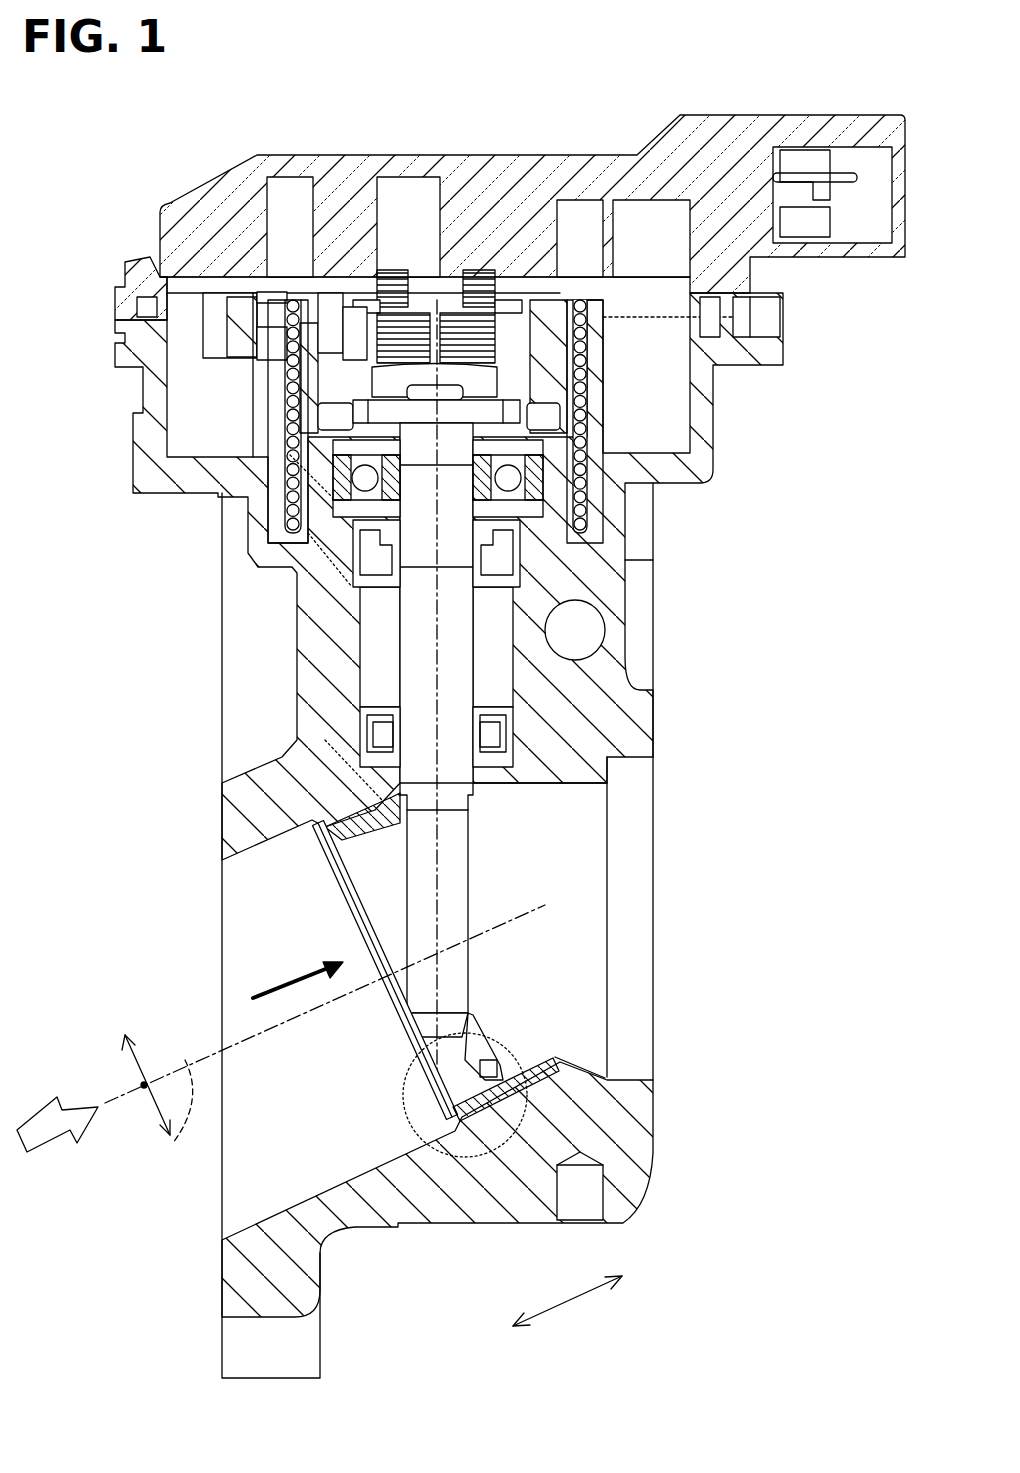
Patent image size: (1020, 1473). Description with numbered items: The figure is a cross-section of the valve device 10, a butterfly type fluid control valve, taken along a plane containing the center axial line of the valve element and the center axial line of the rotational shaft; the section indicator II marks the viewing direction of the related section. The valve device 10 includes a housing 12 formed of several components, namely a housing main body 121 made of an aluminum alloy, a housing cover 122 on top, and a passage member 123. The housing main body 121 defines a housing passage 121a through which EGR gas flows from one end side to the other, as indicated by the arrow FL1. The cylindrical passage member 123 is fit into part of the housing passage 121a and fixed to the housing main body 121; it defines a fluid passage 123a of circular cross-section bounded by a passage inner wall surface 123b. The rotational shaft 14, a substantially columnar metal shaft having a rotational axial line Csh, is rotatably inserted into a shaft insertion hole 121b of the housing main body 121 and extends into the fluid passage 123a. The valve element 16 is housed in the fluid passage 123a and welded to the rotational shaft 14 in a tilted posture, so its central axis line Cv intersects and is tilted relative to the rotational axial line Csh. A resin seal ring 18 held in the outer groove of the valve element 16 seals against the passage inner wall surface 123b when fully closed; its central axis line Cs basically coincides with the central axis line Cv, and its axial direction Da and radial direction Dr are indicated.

The valve device 10 is at (170, 156).
The housing 12 is at (724, 432).
The rotational shaft 14 is at (415, 610).
The valve element 16 is at (398, 898).
The seal ring 18 is at (375, 828).
The housing main body 121 is at (606, 580).
The housing passage 121a is at (270, 1168).
The shaft insertion hole 121b is at (472, 800).
The housing cover 122 is at (332, 158).
The passage member 123 is at (509, 1195).
The fluid passage 123a is at (515, 1033).
The passage inner wall surface 123b is at (415, 1150).
The rotational axial line Csh is at (437, 665).
The central axis line of the valve element Cv is at (182, 1142).
The central axis line of the seal ring Cs is at (149, 1141).
The radial direction of the seal ring Dr is at (150, 1068).
The arrow indicating EGR gas flow FL1 is at (43, 1108).
The axial direction of the seal ring Da is at (582, 1302).
The section line II is at (246, 964).